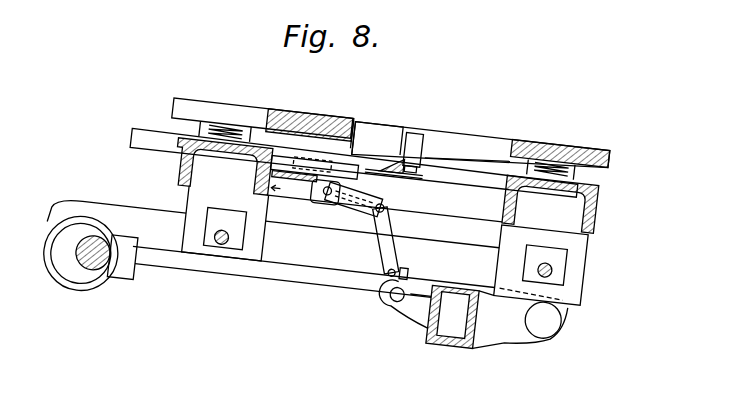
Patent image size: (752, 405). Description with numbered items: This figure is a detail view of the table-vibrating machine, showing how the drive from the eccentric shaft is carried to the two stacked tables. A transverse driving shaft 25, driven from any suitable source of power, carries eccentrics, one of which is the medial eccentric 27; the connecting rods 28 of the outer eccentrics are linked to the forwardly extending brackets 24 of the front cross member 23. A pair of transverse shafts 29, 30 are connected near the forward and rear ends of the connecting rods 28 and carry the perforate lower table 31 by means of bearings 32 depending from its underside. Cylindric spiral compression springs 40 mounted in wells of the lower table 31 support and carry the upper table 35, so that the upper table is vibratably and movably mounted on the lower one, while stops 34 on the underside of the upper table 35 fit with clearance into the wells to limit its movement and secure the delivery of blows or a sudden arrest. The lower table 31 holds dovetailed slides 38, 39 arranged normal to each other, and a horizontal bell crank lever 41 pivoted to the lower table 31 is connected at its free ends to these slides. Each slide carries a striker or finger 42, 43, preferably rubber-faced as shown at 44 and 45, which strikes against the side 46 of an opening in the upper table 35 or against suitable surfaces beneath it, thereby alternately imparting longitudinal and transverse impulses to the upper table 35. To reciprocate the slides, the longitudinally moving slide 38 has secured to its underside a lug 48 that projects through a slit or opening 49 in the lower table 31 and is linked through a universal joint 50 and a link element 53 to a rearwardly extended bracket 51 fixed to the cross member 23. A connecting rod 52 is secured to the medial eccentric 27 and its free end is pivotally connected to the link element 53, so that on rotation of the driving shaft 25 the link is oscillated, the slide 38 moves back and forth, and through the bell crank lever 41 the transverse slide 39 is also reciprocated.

The cross member 23 is at (476, 313).
The brackets 24 is at (539, 293).
The driving shaft 25 is at (115, 278).
The medial eccentric 27 is at (81, 274).
The connecting rods 28 is at (123, 219).
The transverse shaft 29 is at (578, 265).
The transverse shaft 30 is at (238, 238).
The lower table 31 is at (189, 172).
The bearings 32 is at (209, 208).
The stops 34 is at (576, 174).
The upper table 35 is at (206, 104).
The longitudinally moving slide 38 is at (152, 140).
The transverse slide 39 is at (438, 116).
The compression springs 40 is at (231, 120).
The bell crank lever 41 is at (407, 114).
The striker 42 is at (421, 108).
The striker 43 is at (483, 110).
The rubber face 44 is at (371, 112).
The rubber face 45 is at (458, 110).
The side of opening 46 is at (335, 100).
The lug 48 is at (325, 180).
The slit 49 is at (511, 174).
The universal joint 50 is at (374, 192).
The bracket 51 is at (435, 277).
The connecting rod 52 is at (313, 255).
The link element 53 is at (409, 226).